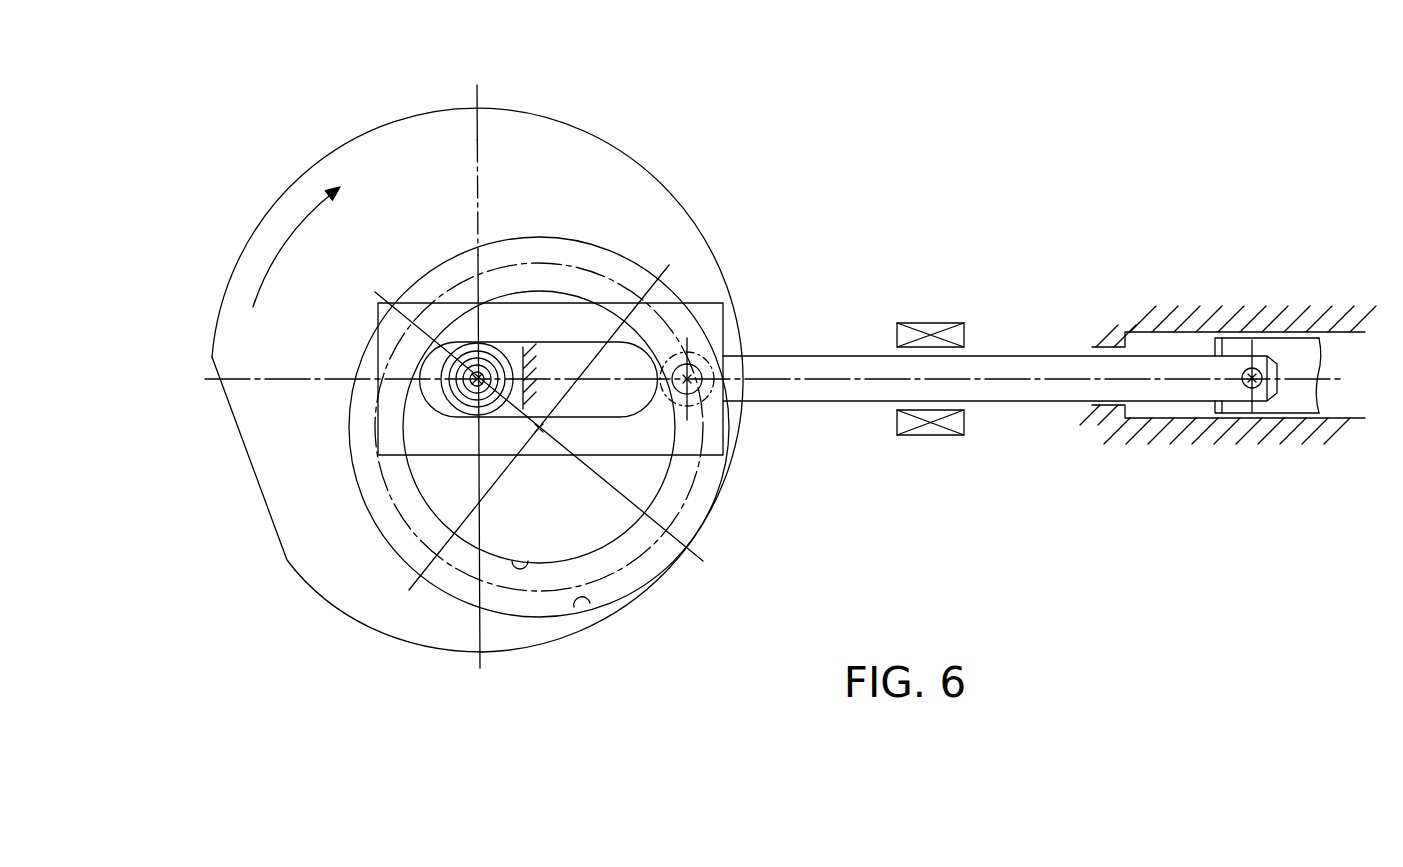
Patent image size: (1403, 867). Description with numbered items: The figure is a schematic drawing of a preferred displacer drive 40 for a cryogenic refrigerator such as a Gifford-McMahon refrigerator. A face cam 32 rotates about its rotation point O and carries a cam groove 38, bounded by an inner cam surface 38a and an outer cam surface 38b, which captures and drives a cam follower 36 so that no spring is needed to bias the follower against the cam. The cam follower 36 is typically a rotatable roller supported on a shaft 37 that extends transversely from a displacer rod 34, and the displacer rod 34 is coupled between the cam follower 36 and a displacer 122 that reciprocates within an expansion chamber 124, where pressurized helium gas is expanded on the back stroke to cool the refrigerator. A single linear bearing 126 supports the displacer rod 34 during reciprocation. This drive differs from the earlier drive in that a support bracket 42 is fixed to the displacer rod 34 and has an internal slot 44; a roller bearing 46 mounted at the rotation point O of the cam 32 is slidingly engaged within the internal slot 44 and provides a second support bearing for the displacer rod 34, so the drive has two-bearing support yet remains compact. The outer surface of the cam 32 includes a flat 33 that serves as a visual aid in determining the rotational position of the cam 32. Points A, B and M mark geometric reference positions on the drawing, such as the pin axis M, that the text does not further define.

The face cam 32 is at (515, 110).
The flat 33 is at (265, 507).
The displacer rod 34 is at (836, 356).
The cam follower 36 is at (705, 406).
The shaft 37 is at (690, 363).
The cam groove 38 is at (517, 620).
The inner cam surface 38a is at (527, 563).
The outer cam surface 38b is at (588, 605).
The displacer drive 40 is at (770, 113).
The support bracket 42 is at (634, 497).
The internal slot 44 is at (570, 415).
The roller bearing 46 is at (437, 414).
The displacer 122 is at (1303, 358).
The expansion chamber 124 is at (1288, 272).
The linear bearing 126 is at (940, 322).
The rotation point O is at (458, 413).
The center point A is at (538, 434).
The point B is at (1248, 384).
The point M is at (702, 362).